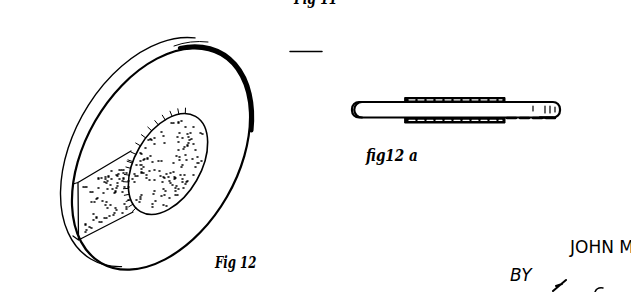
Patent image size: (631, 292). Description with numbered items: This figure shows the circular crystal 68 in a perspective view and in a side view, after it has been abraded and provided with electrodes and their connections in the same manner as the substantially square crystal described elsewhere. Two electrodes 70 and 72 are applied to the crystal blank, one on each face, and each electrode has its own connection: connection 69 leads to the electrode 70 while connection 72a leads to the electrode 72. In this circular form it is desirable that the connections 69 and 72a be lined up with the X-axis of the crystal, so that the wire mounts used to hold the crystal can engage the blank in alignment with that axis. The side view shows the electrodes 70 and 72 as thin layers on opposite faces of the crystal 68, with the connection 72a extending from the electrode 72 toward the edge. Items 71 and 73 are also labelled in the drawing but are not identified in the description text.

In FIG. 12, the circular crystal 68 is at (160, 54).
In FIG. 12A, the circular crystal 68 is at (379, 105).
In FIG. 12, the connection 69 is at (82, 207).
In FIG. 12A, the connection 69 is at (358, 102).
In FIG. 12, the electrode 70 is at (193, 147).
In FIG. 12A, the electrode 70 is at (447, 97).
In FIG. 12A, the upper projection 71 is at (479, 97).
In FIG. 12A, the electrode 72 is at (413, 121).
In FIG. 12A, the connection 72a is at (553, 119).
In FIG. 12A, the lower insert 73 is at (485, 124).